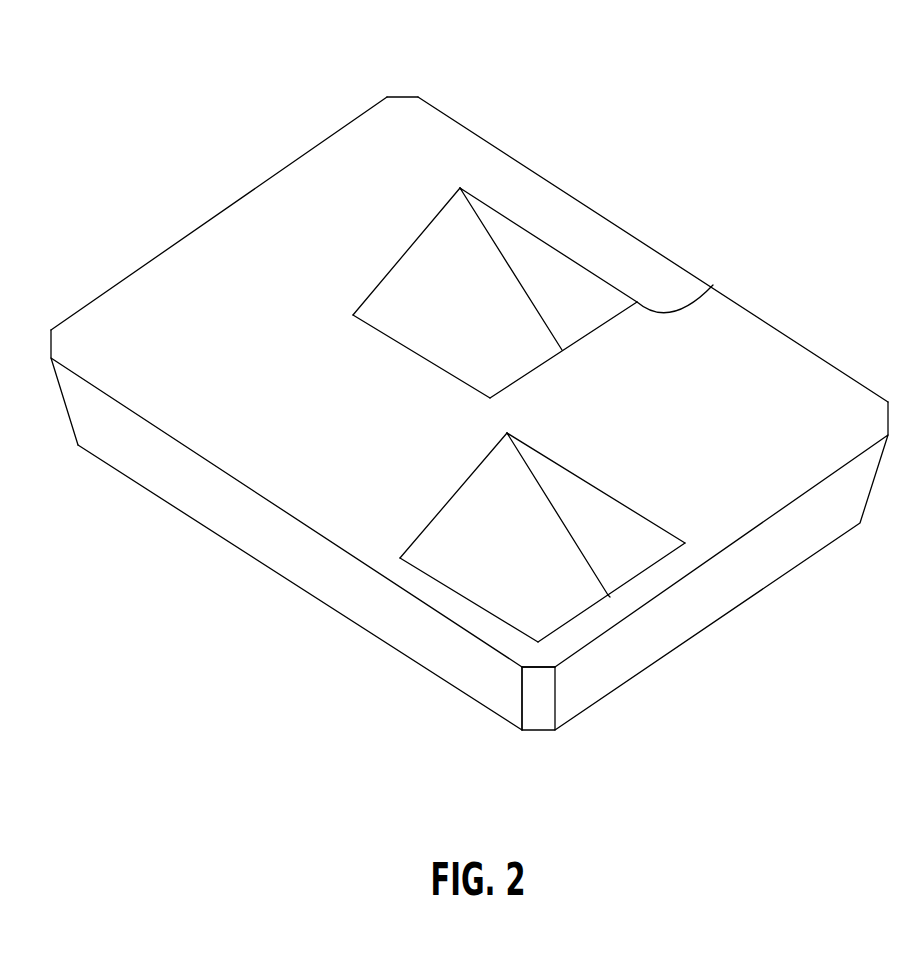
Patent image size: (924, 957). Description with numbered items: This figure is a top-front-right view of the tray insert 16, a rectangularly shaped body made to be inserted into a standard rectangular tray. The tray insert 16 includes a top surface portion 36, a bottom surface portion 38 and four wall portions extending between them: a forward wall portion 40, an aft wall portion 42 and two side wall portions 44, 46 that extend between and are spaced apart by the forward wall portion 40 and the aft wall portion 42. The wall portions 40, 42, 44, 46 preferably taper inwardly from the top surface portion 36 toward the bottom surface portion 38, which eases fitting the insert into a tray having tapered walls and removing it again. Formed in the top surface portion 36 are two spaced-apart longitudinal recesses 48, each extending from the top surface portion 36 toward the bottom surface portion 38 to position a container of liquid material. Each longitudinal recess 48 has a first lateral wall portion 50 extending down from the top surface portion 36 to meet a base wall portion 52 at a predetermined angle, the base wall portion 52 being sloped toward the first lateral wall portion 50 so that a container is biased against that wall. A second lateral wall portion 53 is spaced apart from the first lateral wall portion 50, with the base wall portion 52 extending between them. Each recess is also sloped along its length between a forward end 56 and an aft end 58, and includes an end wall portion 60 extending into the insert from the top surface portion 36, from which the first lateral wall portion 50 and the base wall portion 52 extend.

The tray insert 16 is at (469, 400).
The top surface portion 36 is at (151, 347).
The bottom surface portion 38 is at (300, 598).
The forward wall portion 40 is at (721, 582).
The aft wall portion 42 is at (219, 213).
The side wall portion 44 is at (653, 249).
The side wall portion 46 is at (286, 530).
The longitudinal recess 48 is at (572, 349).
The first lateral wall portion 50 is at (610, 348).
The base wall portion 52 is at (397, 373).
The second lateral wall portion 53 is at (410, 496).
The forward end 56 is at (425, 286).
The aft end 58 is at (706, 519).
The end wall portion 60 is at (629, 505).